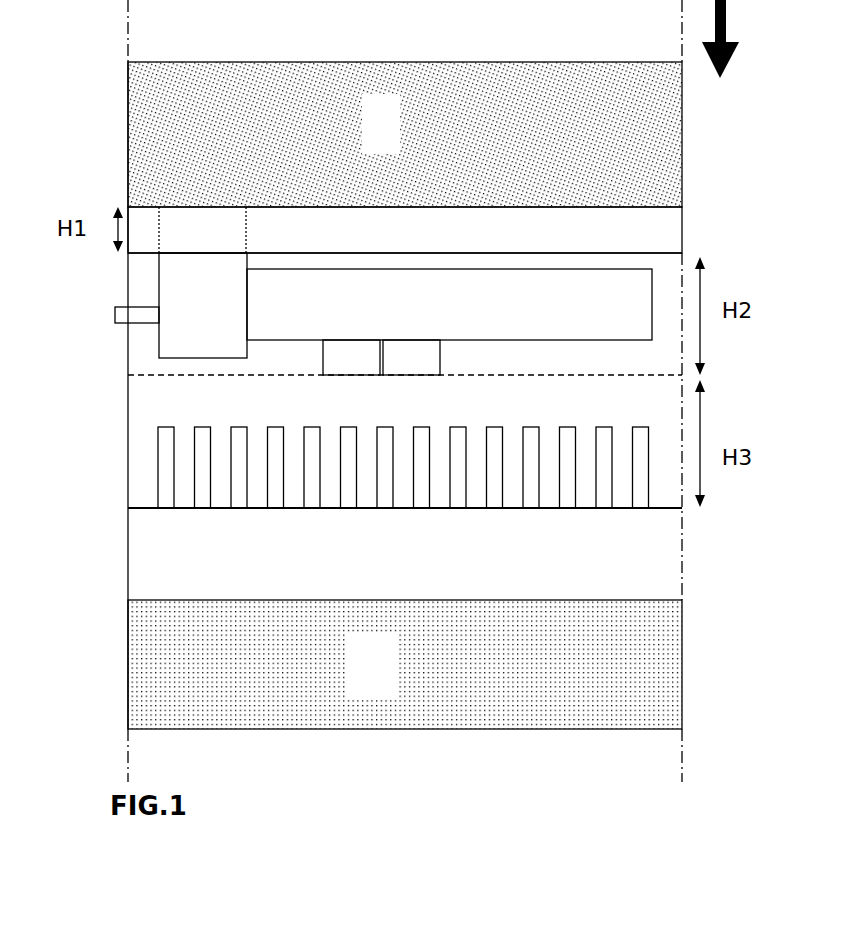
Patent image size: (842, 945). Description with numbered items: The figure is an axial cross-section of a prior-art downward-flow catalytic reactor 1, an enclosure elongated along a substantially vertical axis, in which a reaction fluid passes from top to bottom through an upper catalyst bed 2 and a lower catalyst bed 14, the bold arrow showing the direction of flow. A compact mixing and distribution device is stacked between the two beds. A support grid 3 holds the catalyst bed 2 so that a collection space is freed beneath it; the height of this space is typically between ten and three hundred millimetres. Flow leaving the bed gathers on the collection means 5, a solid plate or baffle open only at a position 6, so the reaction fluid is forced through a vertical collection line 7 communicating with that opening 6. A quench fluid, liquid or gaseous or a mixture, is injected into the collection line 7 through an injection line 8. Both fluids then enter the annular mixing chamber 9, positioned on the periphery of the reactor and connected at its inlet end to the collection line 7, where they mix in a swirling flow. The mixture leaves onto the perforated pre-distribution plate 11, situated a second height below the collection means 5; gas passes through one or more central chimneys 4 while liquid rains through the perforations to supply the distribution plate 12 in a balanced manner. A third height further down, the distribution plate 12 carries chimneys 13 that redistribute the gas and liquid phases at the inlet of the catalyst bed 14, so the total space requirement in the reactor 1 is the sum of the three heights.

The reactor 1 is at (125, 112).
The catalyst bed 2 is at (370, 129).
The support grid 3 is at (660, 199).
The central chimneys 4 is at (415, 358).
The collection means 5 is at (577, 252).
The opening 6 is at (192, 250).
The vertical collection line 7 is at (182, 283).
The injection line 8 is at (138, 316).
The annular mixing chamber 9 is at (515, 282).
The pre-distribution plate 11 is at (128, 375).
The distribution plate 12 is at (521, 508).
The chimneys 13 is at (435, 492).
The catalyst bed 14 is at (386, 666).